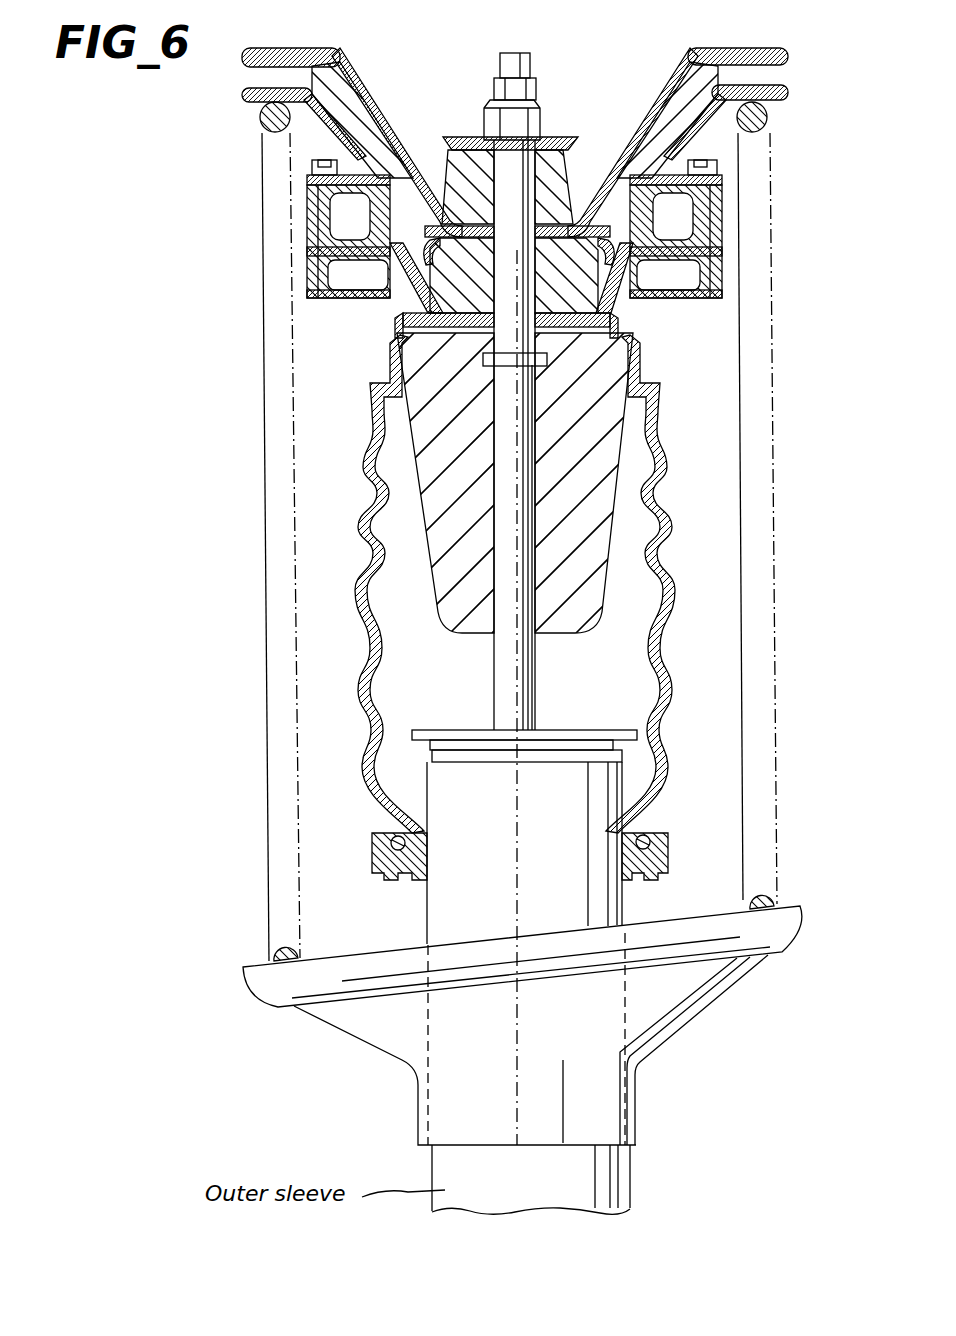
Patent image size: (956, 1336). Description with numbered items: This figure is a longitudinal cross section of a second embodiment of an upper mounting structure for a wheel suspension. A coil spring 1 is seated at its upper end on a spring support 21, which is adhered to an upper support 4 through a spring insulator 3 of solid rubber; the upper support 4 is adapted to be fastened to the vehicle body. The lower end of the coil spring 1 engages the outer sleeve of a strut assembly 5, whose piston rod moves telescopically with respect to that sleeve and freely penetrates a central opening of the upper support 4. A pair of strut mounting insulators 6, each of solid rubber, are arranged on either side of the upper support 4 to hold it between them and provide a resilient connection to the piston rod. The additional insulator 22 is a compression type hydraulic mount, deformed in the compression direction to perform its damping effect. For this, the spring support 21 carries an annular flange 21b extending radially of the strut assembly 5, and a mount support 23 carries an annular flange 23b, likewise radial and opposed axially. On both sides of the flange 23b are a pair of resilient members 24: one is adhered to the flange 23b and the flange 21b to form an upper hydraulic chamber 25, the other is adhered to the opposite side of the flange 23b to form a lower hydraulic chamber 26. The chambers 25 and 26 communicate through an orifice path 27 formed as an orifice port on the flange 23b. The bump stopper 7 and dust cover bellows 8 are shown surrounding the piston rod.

The coil spring 1 is at (262, 119).
The spring insulator 3 is at (350, 88).
The upper support 4 is at (372, 118).
The strut assembly 5 is at (530, 187).
The strut mounting insulators 6 is at (572, 193).
The bump stopper 7 is at (590, 565).
The dust cover bellows 8 is at (670, 497).
The spring support 21 is at (250, 96).
The annular flange 21b is at (307, 172).
The additional insulator 22 is at (298, 206).
The mount support 23 is at (395, 328).
The annular flange 23b is at (323, 252).
The resilient members 24 is at (712, 200).
The upper hydraulic chamber 25 is at (330, 224).
The lower hydraulic chamber 26 is at (373, 278).
The orifice path 27 is at (333, 296).